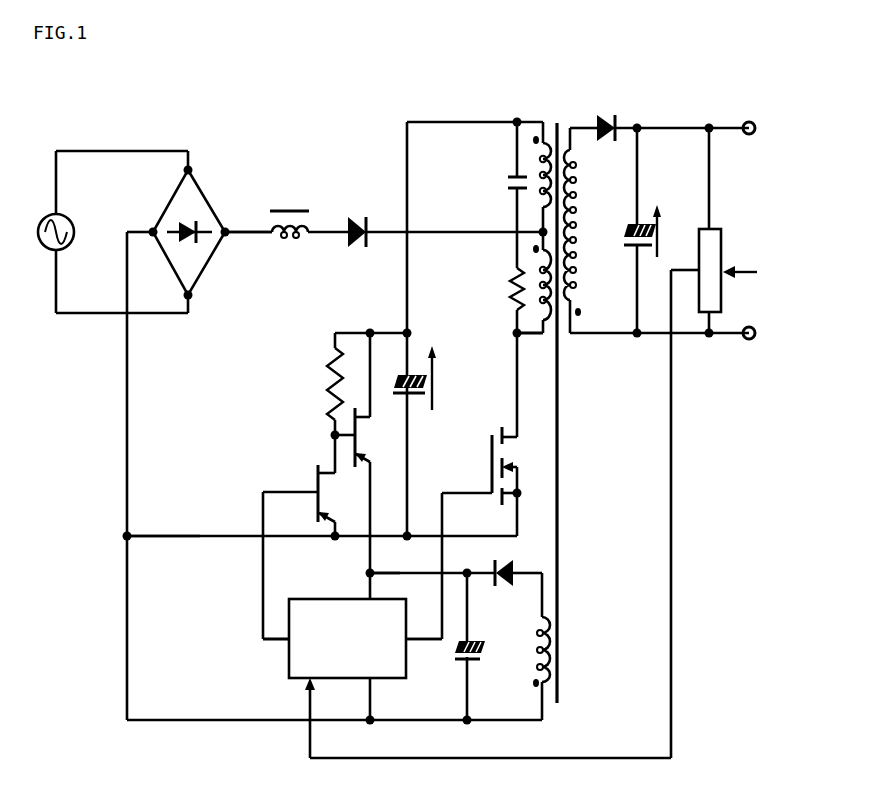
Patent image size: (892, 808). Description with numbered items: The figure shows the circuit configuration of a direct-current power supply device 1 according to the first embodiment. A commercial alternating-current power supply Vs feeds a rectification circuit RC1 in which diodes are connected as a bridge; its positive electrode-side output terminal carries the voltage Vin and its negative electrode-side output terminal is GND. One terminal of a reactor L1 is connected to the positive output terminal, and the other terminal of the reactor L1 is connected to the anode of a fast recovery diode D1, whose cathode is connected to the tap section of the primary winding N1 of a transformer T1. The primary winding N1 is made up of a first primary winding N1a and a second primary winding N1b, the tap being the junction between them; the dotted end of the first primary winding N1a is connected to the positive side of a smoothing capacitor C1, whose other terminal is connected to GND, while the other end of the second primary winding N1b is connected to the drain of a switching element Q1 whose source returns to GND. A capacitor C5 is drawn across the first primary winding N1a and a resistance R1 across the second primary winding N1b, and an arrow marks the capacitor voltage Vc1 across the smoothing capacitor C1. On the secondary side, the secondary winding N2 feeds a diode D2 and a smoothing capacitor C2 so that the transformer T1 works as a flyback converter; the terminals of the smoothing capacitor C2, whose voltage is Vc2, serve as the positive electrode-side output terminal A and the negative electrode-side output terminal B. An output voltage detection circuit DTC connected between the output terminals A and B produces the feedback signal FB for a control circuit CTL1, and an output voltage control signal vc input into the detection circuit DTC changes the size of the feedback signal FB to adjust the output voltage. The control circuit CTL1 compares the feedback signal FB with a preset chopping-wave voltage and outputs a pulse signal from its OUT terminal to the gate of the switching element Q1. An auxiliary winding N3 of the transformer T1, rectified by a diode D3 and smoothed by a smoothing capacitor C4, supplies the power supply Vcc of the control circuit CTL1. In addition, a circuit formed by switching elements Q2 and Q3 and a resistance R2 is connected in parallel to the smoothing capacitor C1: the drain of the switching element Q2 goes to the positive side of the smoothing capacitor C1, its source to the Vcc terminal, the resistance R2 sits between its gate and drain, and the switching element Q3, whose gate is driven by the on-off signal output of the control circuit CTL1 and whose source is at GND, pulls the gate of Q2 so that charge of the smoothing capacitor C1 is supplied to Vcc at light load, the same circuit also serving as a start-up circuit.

The direct-current power supply device 1 is at (311, 87).
The commercial alternating-current power supply Vs is at (71, 221).
The rectification circuit RC1 is at (189, 218).
The positive electrode-side output terminal voltage Vin is at (248, 248).
The reactor L1 is at (289, 213).
The fast recovery diode D1 is at (359, 217).
The capacitor C5 is at (508, 187).
The resistor R1 is at (508, 289).
The transformer T1 is at (559, 400).
The first primary winding N1a is at (540, 160).
The second primary winding N1b is at (540, 271).
The primary winding N1 is at (530, 350).
The secondary winding N2 is at (571, 259).
The auxiliary winding N3 is at (535, 652).
The diode D2 is at (607, 116).
The smoothing capacitor C2 is at (630, 242).
The voltage of the smoothing capacitor C2 Vc2 is at (664, 231).
The positive electrode-side output terminal A is at (755, 132).
The negative electrode-side output terminal B is at (755, 337).
The output voltage detection circuit DTC is at (699, 313).
The output voltage control signal vc is at (750, 272).
The resistance R2 is at (326, 384).
The switching element Q2 is at (372, 437).
The switching element Q3 is at (335, 493).
The smoothing capacitor C1 is at (412, 400).
The capacitor voltage Vc1 is at (438, 378).
The switching element Q1 is at (517, 466).
The negative electrode-side output terminal GND is at (163, 525).
The control circuit CTL1 is at (307, 598).
The power supply of the control circuit Vcc is at (370, 577).
The OUT terminal OUT is at (424, 654).
The feedback signal FB is at (301, 691).
The diode D3 is at (506, 590).
The smoothing capacitor C4 is at (475, 653).